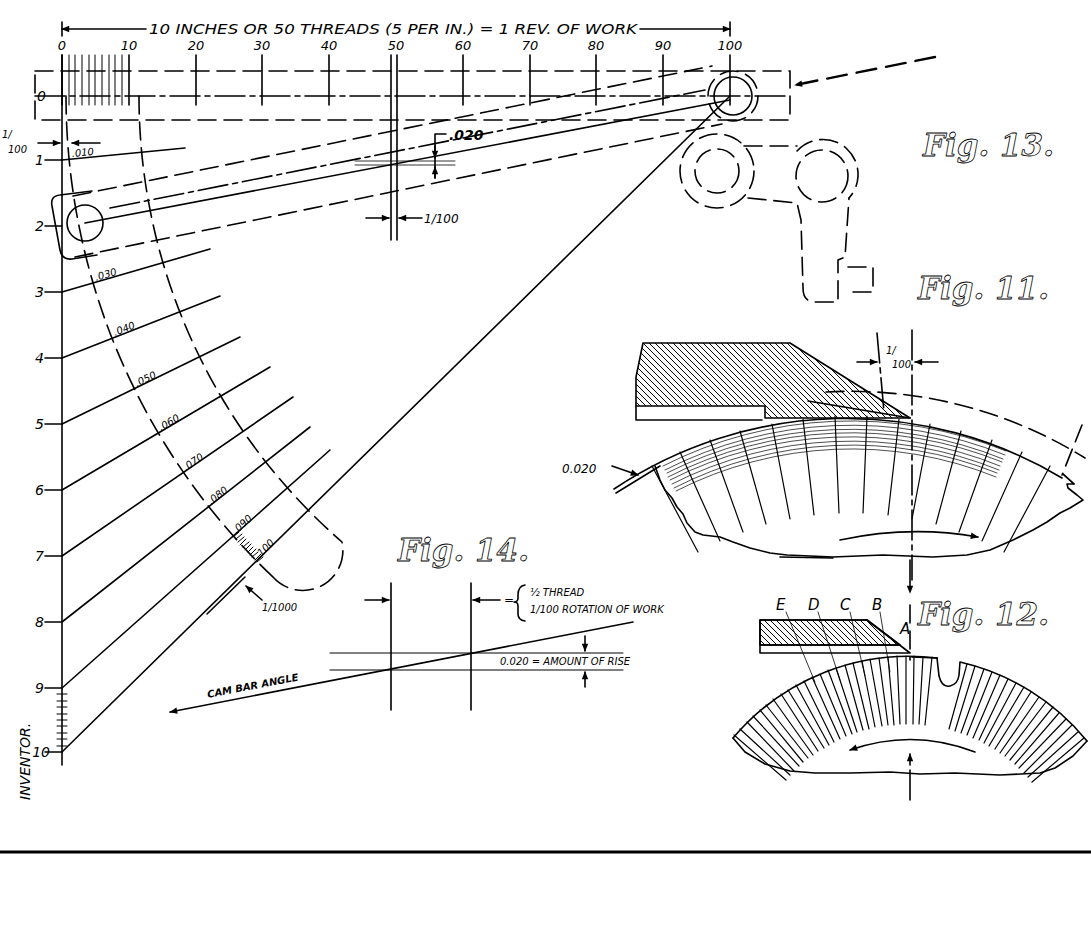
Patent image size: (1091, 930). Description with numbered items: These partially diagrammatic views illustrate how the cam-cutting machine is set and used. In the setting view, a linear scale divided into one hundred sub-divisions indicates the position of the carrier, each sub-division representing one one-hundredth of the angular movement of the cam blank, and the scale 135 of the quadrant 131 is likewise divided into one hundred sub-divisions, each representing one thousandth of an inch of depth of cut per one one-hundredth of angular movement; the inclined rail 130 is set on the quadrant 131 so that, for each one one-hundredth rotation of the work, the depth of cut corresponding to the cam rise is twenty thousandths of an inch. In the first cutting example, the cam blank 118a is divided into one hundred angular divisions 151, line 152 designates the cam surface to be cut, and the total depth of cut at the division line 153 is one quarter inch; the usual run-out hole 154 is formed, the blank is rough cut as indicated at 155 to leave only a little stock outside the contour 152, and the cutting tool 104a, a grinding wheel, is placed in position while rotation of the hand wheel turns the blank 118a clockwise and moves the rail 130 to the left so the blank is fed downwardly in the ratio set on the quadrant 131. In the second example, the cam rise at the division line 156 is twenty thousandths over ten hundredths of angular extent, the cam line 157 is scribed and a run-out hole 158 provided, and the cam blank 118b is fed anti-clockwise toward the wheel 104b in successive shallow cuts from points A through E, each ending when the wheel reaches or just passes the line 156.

In FIG. 13, the inclined rail 130 is at (306, 213).
In FIG. 13, the quadrant 131 is at (186, 326).
In FIG. 13, the scale 135 is at (234, 577).
In FIG. 11, the cutting tool 104a is at (715, 355).
In FIG. 11, the rough cut 155 is at (808, 404).
In FIG. 11, the cam surface 152 is at (966, 432).
In FIG. 11, the division line 153 is at (1072, 447).
In FIG. 11, the run-out hole 154 is at (1062, 490).
In FIG. 11, the angular divisions 151 is at (788, 525).
In FIG. 11, the cam blank 118a is at (722, 535).
In FIG. 12, the wheel 104b is at (763, 647).
In FIG. 12, the division line 156 is at (938, 622).
In FIG. 12, the run-out hole 158 is at (963, 665).
In FIG. 12, the cam line 157 is at (920, 663).
In FIG. 12, the cam blank 118b is at (833, 768).